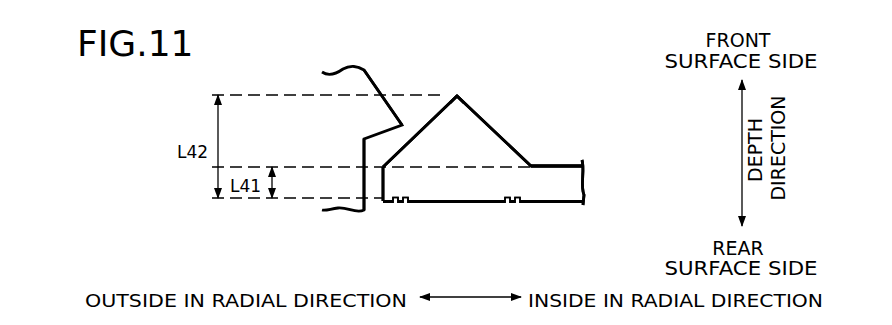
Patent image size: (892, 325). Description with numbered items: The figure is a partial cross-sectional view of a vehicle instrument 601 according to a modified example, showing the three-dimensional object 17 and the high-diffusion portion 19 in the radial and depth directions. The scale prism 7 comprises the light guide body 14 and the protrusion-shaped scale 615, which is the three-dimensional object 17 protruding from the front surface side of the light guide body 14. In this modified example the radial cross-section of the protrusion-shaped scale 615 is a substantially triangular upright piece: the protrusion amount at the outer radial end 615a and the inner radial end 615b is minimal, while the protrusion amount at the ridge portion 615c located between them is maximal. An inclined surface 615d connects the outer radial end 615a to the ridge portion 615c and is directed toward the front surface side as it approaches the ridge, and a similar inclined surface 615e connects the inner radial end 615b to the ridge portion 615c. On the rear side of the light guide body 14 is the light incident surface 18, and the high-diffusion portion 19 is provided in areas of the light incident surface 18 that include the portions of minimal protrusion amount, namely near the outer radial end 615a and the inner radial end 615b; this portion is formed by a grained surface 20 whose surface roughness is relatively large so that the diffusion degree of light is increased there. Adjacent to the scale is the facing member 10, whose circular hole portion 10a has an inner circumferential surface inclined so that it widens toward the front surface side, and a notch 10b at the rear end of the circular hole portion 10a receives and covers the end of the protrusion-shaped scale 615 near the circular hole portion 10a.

The facing member 10 is at (347, 117).
The circular hole portion 10a is at (380, 94).
The notch 10b is at (362, 152).
The vehicle instrument 601 is at (656, 40).
The scale prism 7 is at (643, 90).
The protrusion-shaped scale 615 is at (493, 152).
The three-dimensional object 17 is at (487, 150).
The outer radial end 615a is at (382, 170).
The inner radial end 615b is at (541, 156).
The ridge portion 615c is at (458, 95).
The inclined surface 615d is at (422, 128).
The inclined surface 615e is at (478, 101).
The light guide body 14 is at (565, 162).
The light incident surface 18 is at (493, 213).
The high-diffusion portion 19 is at (404, 213).
The grained surface 20 is at (488, 235).